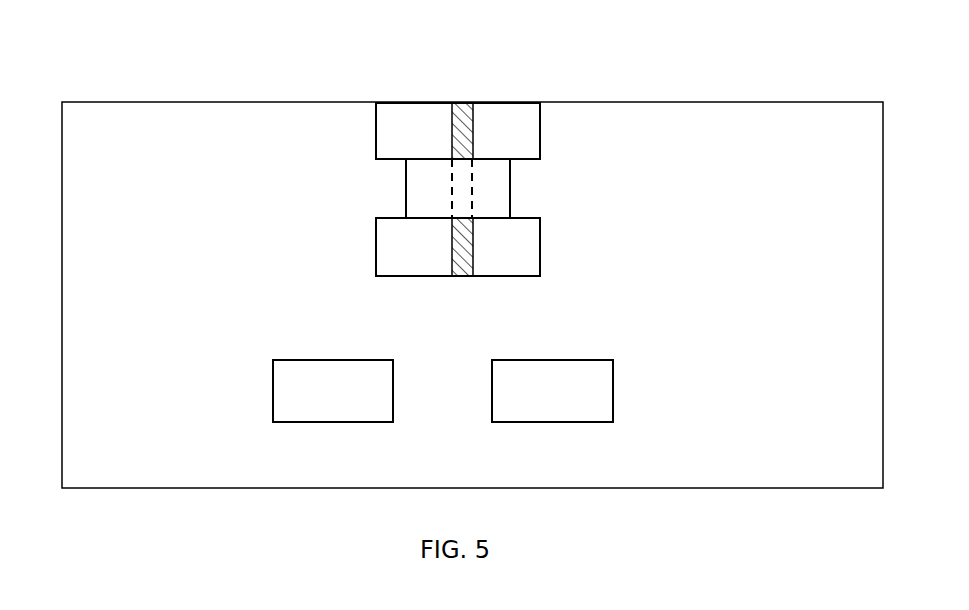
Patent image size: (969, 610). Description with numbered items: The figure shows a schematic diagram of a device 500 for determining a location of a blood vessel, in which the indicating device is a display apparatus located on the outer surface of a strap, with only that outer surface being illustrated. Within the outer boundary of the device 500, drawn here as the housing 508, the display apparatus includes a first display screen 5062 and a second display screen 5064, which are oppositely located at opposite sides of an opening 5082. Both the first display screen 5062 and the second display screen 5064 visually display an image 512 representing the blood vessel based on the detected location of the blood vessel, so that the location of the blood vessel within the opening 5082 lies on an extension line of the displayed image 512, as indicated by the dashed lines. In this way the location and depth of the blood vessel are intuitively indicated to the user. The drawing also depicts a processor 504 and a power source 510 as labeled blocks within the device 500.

The device for determining a location of a blood vessel 500 is at (90, 53).
The housing 508 is at (225, 102).
The first display screen 5062 is at (376, 131).
The opening 5082 is at (406, 187).
The second display screen 5064 is at (376, 245).
The image representing the blood vessel 512 is at (473, 131).
The processor 504 is at (333, 360).
The power source 510 is at (553, 360).